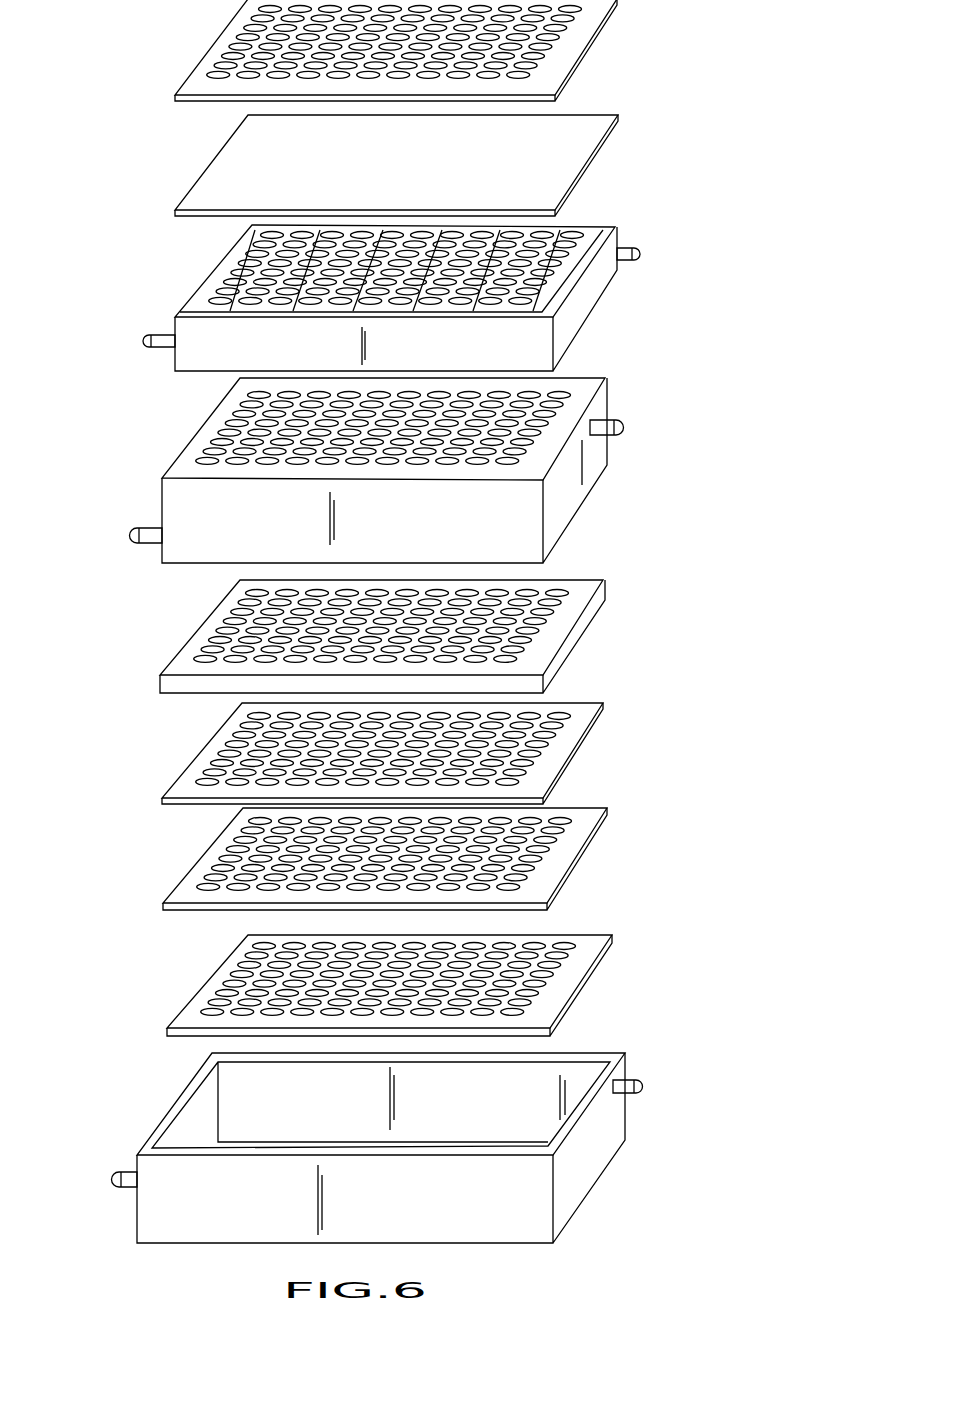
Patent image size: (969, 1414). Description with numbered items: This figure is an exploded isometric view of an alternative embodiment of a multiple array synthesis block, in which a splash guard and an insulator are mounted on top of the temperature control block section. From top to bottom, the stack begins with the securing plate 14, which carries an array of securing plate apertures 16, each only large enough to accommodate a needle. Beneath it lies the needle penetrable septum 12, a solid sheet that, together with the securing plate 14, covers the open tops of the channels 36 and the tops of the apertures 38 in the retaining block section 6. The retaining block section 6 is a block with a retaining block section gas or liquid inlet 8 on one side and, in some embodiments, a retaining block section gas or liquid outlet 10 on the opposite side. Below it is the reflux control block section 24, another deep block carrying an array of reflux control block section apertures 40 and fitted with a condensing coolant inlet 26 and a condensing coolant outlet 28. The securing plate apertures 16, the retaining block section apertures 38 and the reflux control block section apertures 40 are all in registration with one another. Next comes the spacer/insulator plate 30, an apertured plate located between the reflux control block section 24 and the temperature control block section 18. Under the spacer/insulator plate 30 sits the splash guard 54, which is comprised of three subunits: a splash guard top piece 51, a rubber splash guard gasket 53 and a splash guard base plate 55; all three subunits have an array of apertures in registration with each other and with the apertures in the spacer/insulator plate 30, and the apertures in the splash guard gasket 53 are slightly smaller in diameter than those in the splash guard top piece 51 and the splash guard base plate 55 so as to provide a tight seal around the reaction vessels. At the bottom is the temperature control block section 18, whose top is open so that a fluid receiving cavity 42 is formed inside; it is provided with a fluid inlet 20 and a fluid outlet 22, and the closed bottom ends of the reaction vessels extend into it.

The retaining block section 6 is at (406, 286).
The retaining block section gas or liquid inlet 8 is at (640, 253).
The retaining block section gas or liquid outlet 10 is at (150, 348).
The needle penetrable septum 12 is at (593, 137).
The securing plate 14 is at (413, 75).
The securing plate apertures 16 is at (257, 77).
The temperature control block section 18 is at (390, 1144).
The fluid inlet 20 is at (637, 1078).
The fluid outlet 22 is at (122, 1188).
The reflux control block section 24 is at (413, 494).
The condensing coolant inlet 26 is at (625, 428).
The condensing coolant outlet 28 is at (145, 545).
The spacer/insulator plate 30 is at (590, 620).
The channels 36 is at (617, 237).
The retaining block section apertures 38 is at (217, 305).
The reflux control block section apertures 40 is at (228, 440).
The fluid receiving cavity 42 is at (205, 1115).
The splash guard top piece 51 is at (597, 703).
The rubber splash guard gasket 53 is at (600, 808).
The splash guard 54 is at (445, 849).
The splash guard base plate 55 is at (402, 958).